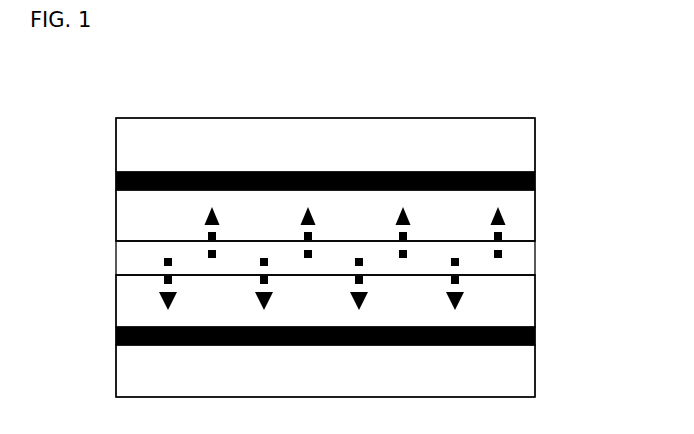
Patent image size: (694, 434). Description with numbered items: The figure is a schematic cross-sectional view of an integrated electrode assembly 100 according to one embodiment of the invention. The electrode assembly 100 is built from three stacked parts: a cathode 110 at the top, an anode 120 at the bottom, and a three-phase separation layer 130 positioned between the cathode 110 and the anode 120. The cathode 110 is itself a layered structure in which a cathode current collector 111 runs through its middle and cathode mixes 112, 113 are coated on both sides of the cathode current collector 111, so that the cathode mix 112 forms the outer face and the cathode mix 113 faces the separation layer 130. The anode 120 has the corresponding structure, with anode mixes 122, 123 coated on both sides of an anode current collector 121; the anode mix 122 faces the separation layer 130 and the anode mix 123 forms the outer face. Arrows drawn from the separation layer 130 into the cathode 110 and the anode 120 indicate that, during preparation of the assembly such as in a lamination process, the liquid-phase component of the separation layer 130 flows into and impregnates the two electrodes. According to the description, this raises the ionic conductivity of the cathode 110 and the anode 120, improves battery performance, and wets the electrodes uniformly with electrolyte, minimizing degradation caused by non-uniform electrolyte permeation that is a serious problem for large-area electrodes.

The electrode assembly 100 is at (97, 103).
The cathode 110 is at (116, 118).
The cathode current collector 111 is at (536, 173).
The cathode mix 112 is at (525, 146).
The cathode mix 113 is at (525, 215).
The anode 120 is at (116, 275).
The anode current collector 121 is at (536, 338).
The anode mix 122 is at (525, 302).
The anode mix 123 is at (525, 373).
The 3-phase separation layer 130 is at (525, 260).